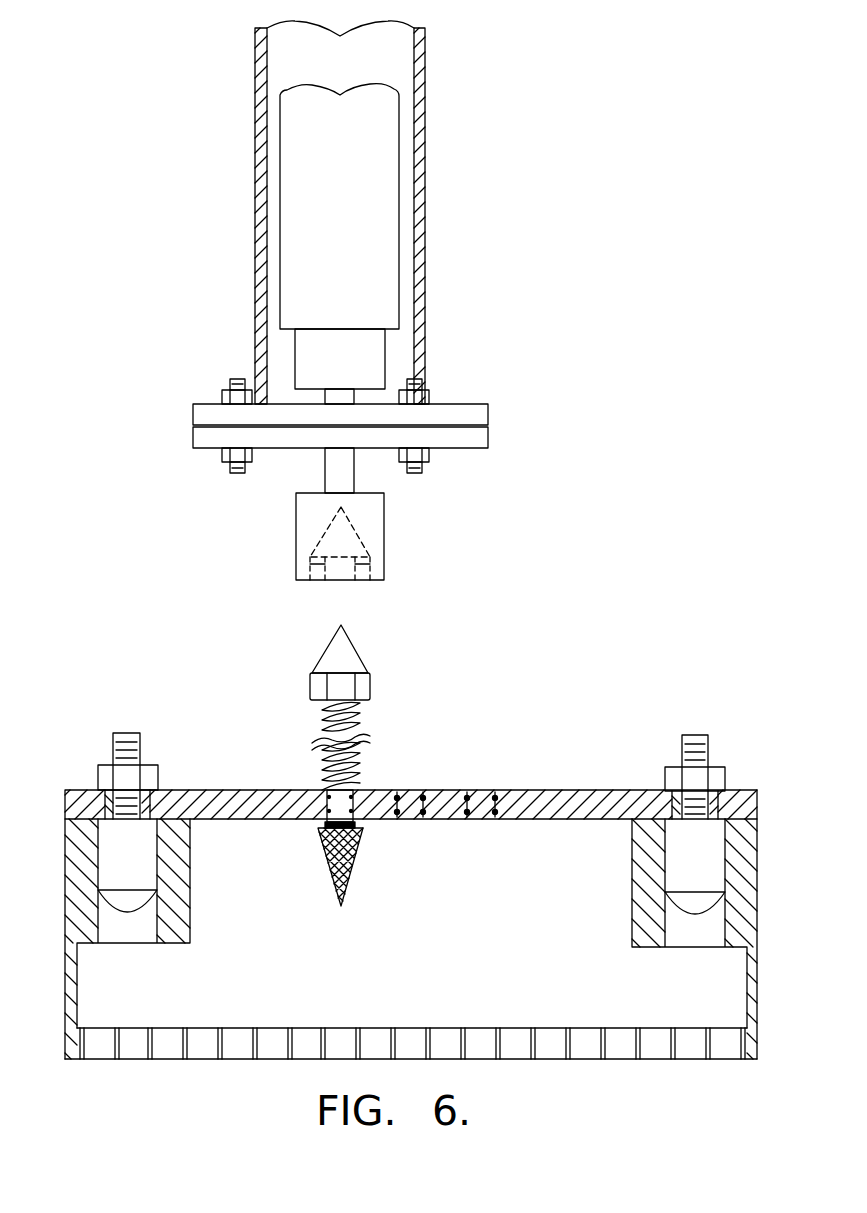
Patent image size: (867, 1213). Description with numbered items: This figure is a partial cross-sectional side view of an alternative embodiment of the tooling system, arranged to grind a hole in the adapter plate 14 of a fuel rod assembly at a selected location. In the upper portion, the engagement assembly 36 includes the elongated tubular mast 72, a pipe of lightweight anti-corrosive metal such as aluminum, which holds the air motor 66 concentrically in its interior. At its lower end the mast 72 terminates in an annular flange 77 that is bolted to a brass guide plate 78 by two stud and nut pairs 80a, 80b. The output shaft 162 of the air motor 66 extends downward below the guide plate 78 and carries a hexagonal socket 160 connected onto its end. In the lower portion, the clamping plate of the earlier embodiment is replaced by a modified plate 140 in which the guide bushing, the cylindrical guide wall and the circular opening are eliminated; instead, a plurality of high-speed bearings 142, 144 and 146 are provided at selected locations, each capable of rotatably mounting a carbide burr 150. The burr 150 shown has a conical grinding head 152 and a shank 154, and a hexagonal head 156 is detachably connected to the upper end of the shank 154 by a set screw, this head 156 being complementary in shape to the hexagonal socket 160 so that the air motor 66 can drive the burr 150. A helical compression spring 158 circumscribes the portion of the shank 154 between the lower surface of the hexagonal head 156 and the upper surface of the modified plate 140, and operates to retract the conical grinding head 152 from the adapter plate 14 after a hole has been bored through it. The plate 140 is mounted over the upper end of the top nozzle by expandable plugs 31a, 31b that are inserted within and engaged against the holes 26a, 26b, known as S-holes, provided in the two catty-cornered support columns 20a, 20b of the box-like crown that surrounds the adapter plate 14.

The engagement assembly 36 is at (241, 58).
The tubular mast 72 is at (425, 148).
The air motor 66 is at (349, 228).
The annular flange 77 is at (488, 414).
The guide plate 78 is at (488, 437).
The stud and nut pair 80a is at (222, 398).
The stud and nut pair 80b is at (430, 397).
The output shaft 162 is at (322, 474).
The hexagonal socket 160 is at (373, 520).
The modified plate 140 is at (198, 779).
The high-speed bearing 144 is at (413, 820).
The high-speed bearing 146 is at (483, 820).
The support column 20a is at (182, 920).
The support column 20b is at (640, 905).
The hole 26a is at (155, 928).
The hole 26b is at (668, 930).
The expandable plug 31a is at (110, 735).
The expandable plug 31b is at (680, 735).
The adapter plate 14 is at (215, 1026).
The carbide burr 150 is at (358, 882).
The hexagonal head 156 is at (348, 657).
The helical compression spring 158 is at (372, 717).
The shank 154 is at (322, 790).
The high-speed bearing 142 is at (325, 818).
The conical grinding head 152 is at (329, 860).